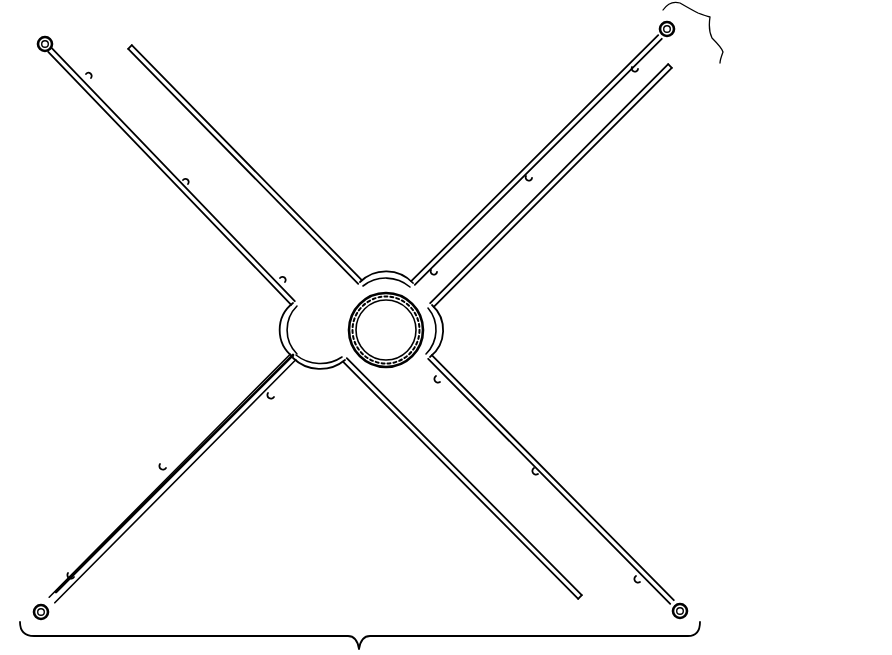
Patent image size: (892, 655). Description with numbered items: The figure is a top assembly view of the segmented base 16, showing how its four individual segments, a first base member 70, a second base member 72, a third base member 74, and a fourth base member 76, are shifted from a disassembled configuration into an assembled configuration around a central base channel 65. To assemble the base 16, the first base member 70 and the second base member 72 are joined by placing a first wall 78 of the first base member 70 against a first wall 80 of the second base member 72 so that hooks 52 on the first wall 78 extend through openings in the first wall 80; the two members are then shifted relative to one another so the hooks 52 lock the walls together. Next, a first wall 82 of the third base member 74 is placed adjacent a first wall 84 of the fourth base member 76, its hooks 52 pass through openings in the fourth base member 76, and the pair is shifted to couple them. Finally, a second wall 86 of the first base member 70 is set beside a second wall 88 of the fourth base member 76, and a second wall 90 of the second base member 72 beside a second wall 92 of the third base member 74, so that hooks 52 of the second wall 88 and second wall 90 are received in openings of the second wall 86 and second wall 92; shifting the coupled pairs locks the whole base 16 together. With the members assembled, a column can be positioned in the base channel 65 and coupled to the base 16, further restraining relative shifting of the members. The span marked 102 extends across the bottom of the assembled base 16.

The base 16 is at (362, 94).
The hooks 52 is at (88, 76).
The base channel 65 is at (290, 345).
The first base member 70 is at (272, 167).
The second base member 72 is at (575, 195).
The third base member 74 is at (414, 457).
The fourth base member 76 is at (161, 189).
The first wall 78 is at (580, 110).
The first wall 80 is at (630, 113).
The first wall 82 is at (133, 530).
The first wall 84 is at (115, 525).
The second wall 86 is at (200, 112).
The second wall 88 is at (105, 110).
The second wall 90 is at (527, 452).
The second wall 92 is at (505, 527).
The overall width 102 is at (454, 654).